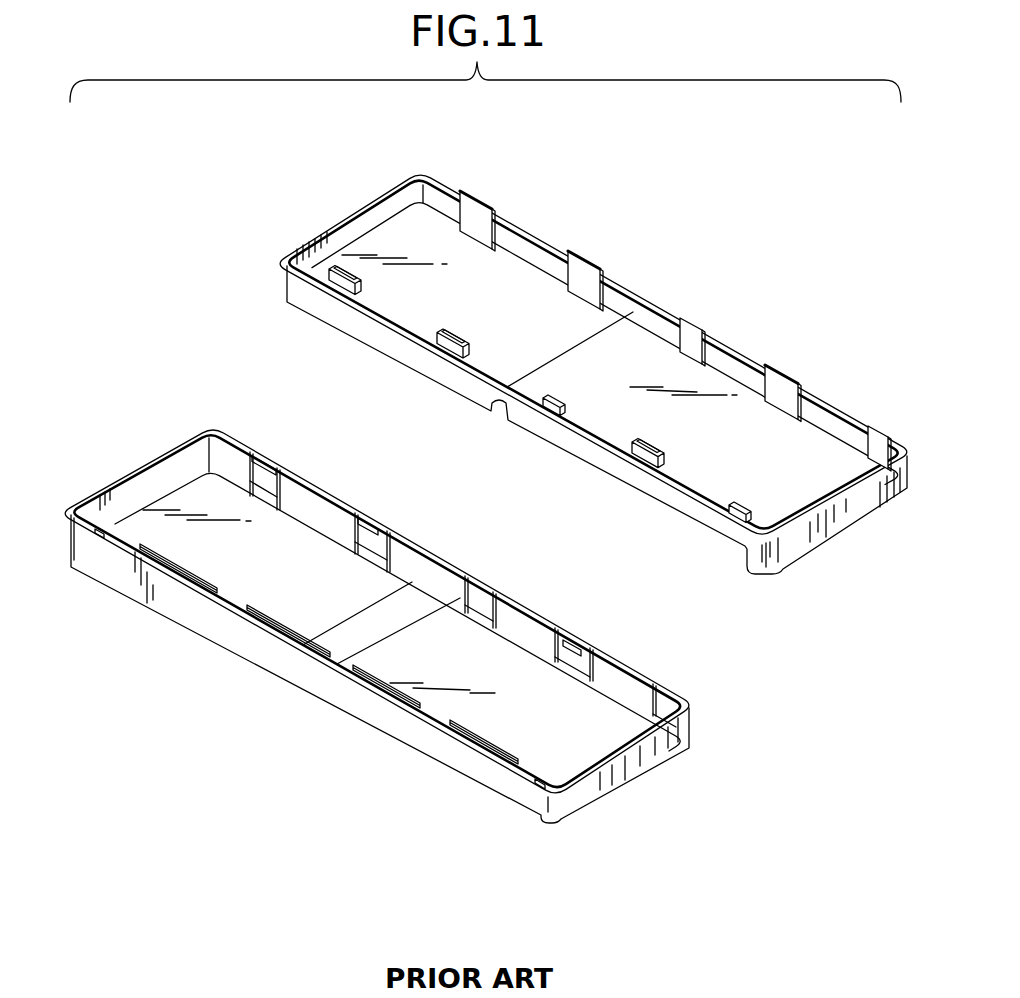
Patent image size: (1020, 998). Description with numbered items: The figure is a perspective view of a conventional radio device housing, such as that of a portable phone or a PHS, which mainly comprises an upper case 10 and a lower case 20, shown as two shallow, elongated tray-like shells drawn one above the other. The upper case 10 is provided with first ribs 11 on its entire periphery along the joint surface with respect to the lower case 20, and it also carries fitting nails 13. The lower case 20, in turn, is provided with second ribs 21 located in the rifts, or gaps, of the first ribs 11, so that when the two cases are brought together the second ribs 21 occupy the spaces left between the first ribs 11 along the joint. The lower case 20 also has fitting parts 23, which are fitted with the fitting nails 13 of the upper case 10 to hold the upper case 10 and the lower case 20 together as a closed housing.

The upper case 10 is at (377, 646).
The first ribs 11 is at (153, 563).
The fitting nails 13 is at (376, 530).
The lower case 20 is at (592, 395).
The second ribs 21 is at (545, 408).
The fitting parts 23 is at (333, 276).